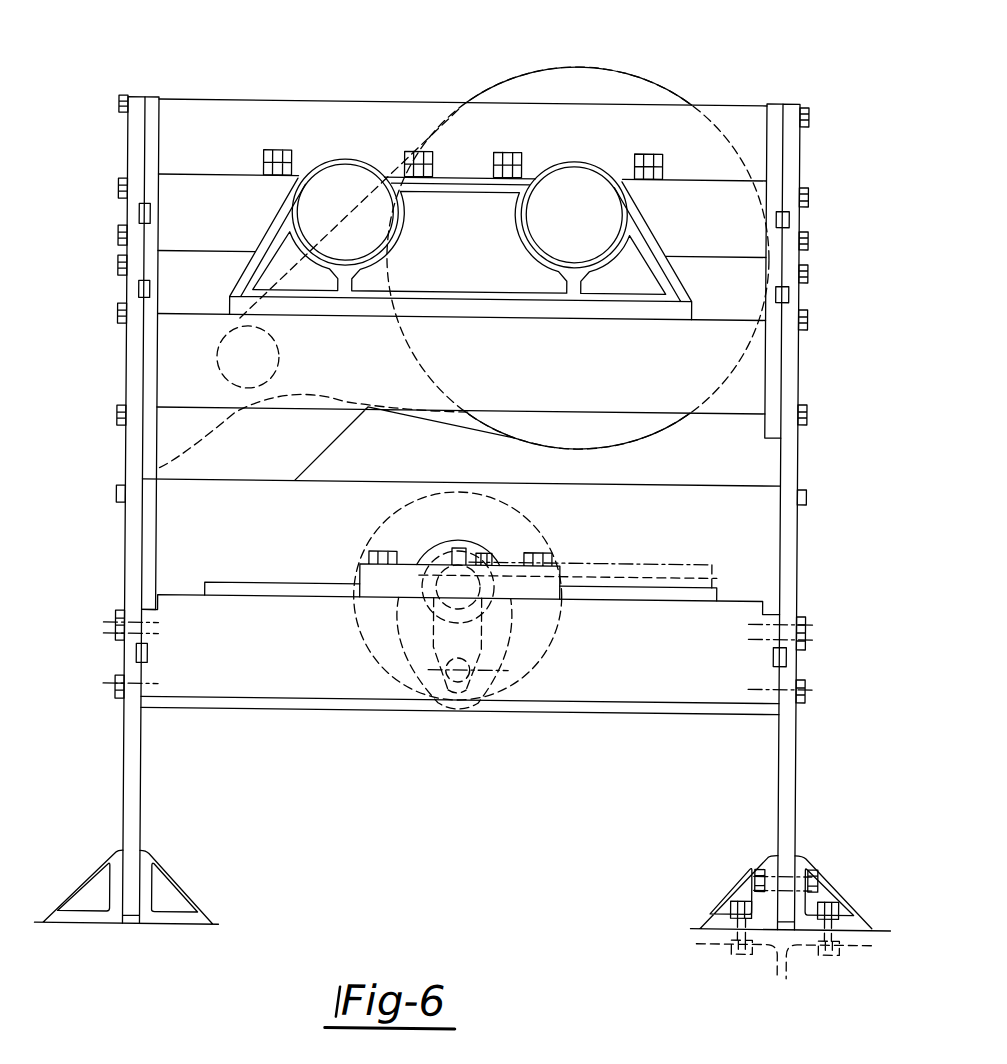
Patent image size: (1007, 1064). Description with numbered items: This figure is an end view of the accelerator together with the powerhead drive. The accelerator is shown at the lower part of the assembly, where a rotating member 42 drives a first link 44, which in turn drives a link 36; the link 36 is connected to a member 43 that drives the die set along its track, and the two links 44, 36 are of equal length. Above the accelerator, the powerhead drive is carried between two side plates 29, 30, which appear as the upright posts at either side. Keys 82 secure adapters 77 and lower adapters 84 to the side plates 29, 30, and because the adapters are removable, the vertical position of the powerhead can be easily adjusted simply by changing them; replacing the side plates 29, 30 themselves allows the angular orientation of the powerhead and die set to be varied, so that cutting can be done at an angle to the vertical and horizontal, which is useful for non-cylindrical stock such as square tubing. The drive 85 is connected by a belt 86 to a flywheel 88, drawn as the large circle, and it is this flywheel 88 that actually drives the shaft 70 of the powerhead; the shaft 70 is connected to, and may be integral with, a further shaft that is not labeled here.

The adapter 77 is at (439, 490).
The side plate 29 is at (769, 183).
The key 82 is at (139, 216).
The side plate 30 is at (126, 343).
The lower adapter 84 is at (150, 381).
The drive 85 is at (228, 383).
The belt 86 is at (160, 471).
The flywheel 88 is at (553, 66).
The shaft 70 is at (578, 226).
The rotating member 42 is at (384, 541).
The member 43 is at (718, 576).
The first link 44 is at (402, 638).
The link 36 is at (450, 650).